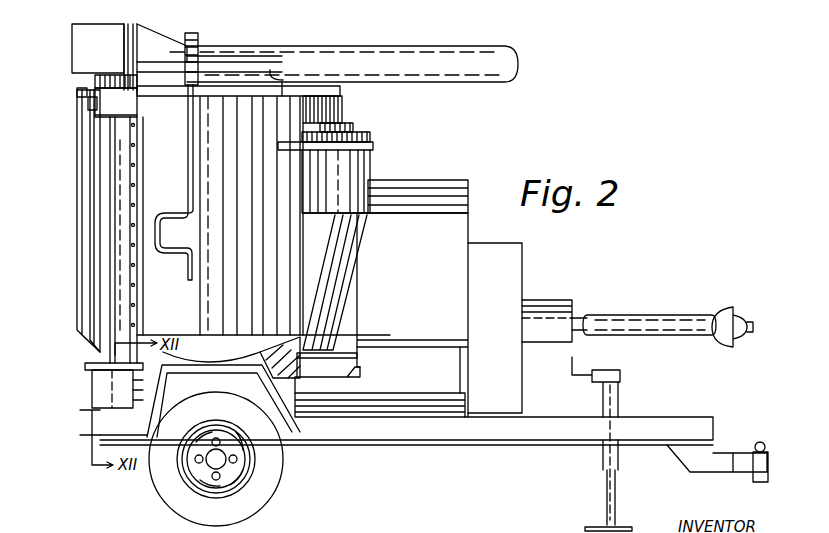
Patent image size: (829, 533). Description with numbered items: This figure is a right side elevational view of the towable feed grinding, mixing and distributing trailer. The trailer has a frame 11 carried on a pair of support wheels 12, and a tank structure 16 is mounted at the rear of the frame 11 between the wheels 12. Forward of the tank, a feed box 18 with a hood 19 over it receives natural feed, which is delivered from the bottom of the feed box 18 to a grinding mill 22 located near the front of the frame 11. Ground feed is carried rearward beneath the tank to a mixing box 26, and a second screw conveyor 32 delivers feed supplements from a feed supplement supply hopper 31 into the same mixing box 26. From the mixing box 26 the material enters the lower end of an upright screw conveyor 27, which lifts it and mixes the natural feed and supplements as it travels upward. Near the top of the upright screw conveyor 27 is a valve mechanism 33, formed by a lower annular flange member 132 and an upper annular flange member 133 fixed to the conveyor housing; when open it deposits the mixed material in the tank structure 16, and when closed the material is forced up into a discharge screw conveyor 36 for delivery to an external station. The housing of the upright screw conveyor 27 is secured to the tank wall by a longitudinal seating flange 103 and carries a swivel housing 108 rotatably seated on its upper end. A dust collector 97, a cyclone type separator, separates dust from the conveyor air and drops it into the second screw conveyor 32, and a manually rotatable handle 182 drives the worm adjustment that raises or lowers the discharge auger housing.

The frame 11 is at (449, 458).
The support wheels 12 is at (175, 495).
The tank structure 16 is at (351, 109).
The feed box 18 is at (423, 260).
The hood 19 is at (432, 178).
The grinding mill 22 is at (526, 251).
The mixing box 26 is at (82, 389).
The upright screw conveyor 27 is at (87, 281).
The feed supplement supply hopper 31 is at (417, 395).
The second screw conveyor 32 is at (353, 429).
The valve mechanism 33 is at (74, 127).
The discharge screw conveyor 36 is at (345, 40).
The dust collector 97 is at (360, 163).
The longitudinal seating flange 103 is at (143, 147).
The swivel housing 108 is at (118, 4).
The lower annular flange member 132 is at (91, 130).
The upper annular flange member 133 is at (85, 83).
The manually rotatable handle 182 is at (190, 200).